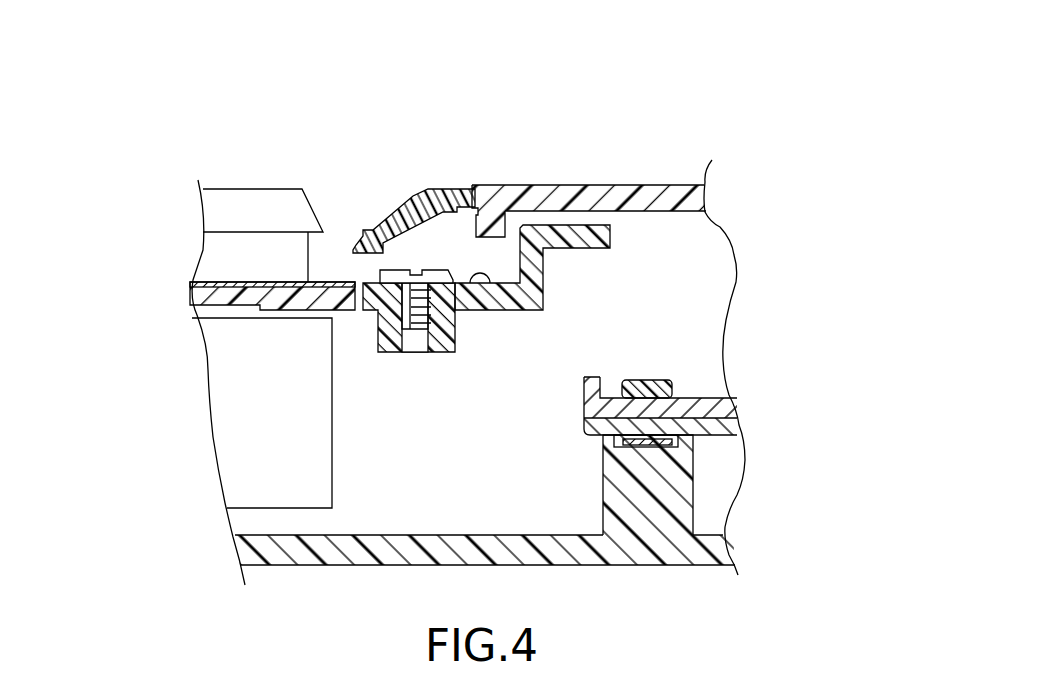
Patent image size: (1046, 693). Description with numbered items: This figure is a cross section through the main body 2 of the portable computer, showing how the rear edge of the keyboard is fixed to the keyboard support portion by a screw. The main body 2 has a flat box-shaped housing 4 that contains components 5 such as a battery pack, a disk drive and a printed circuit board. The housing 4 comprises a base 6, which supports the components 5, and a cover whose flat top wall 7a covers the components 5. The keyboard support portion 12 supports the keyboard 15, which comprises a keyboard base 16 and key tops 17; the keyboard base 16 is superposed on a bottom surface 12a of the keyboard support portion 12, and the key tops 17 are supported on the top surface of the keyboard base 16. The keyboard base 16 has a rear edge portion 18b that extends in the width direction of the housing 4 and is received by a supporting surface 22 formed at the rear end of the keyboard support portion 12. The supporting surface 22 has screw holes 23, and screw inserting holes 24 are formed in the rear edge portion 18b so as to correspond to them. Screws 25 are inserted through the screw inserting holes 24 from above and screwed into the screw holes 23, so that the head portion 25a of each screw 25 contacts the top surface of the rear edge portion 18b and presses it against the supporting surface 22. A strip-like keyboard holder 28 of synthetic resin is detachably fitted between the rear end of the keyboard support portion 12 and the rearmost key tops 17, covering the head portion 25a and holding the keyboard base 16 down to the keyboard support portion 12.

The main body 2 is at (668, 574).
The housing 4 is at (723, 549).
The components 5 is at (327, 457).
The base 6 is at (333, 558).
The top wall 7a is at (663, 198).
The keyboard support portion 12 is at (327, 270).
The bottom surface 12a is at (250, 321).
The keyboard 15 is at (220, 211).
The keyboard base 16 is at (243, 281).
The key tops 17 is at (252, 200).
The rear edge portion 18b is at (434, 272).
The supporting surface 22 is at (489, 290).
The screw holes 23 is at (422, 330).
The screw inserting holes 24 is at (457, 272).
The screws 25 is at (387, 226).
The head portion 25a is at (440, 272).
The keyboard holder 28 is at (384, 212).